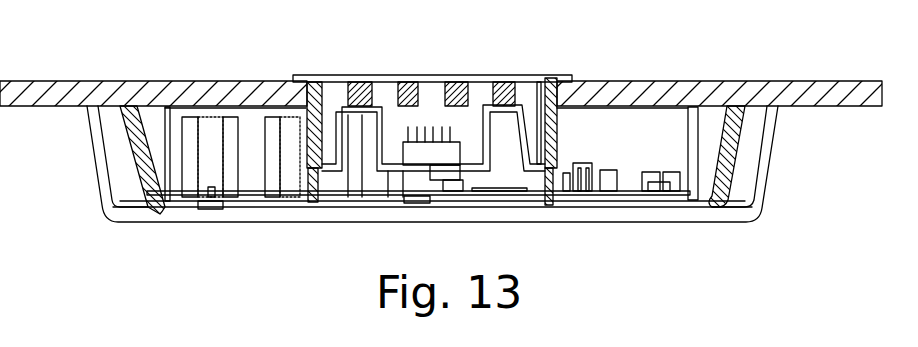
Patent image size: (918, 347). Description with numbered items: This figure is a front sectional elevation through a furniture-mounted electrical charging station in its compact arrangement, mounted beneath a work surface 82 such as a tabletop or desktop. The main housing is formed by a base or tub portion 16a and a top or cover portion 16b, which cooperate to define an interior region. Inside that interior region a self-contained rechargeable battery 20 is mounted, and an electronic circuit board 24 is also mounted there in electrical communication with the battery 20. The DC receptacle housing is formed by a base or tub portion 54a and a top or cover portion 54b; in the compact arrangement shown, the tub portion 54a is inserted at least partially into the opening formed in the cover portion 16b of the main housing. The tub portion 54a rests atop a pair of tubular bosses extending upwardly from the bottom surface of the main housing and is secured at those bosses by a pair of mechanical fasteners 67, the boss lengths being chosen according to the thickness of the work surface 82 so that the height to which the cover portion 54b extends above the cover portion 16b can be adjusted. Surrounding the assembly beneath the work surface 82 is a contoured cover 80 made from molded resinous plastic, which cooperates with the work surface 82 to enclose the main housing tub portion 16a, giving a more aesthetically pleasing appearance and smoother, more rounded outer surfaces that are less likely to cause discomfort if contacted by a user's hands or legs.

The work surface 82 is at (137, 80).
The contoured cover 80 is at (103, 190).
The rechargeable battery 20 is at (252, 128).
The electronic circuit board 24 is at (627, 187).
The tub portion 16a is at (710, 122).
The cover portion 16b is at (658, 118).
The tub portion 54a is at (556, 135).
The cover portion 54b is at (553, 77).
The mechanical fasteners 67 is at (312, 207).